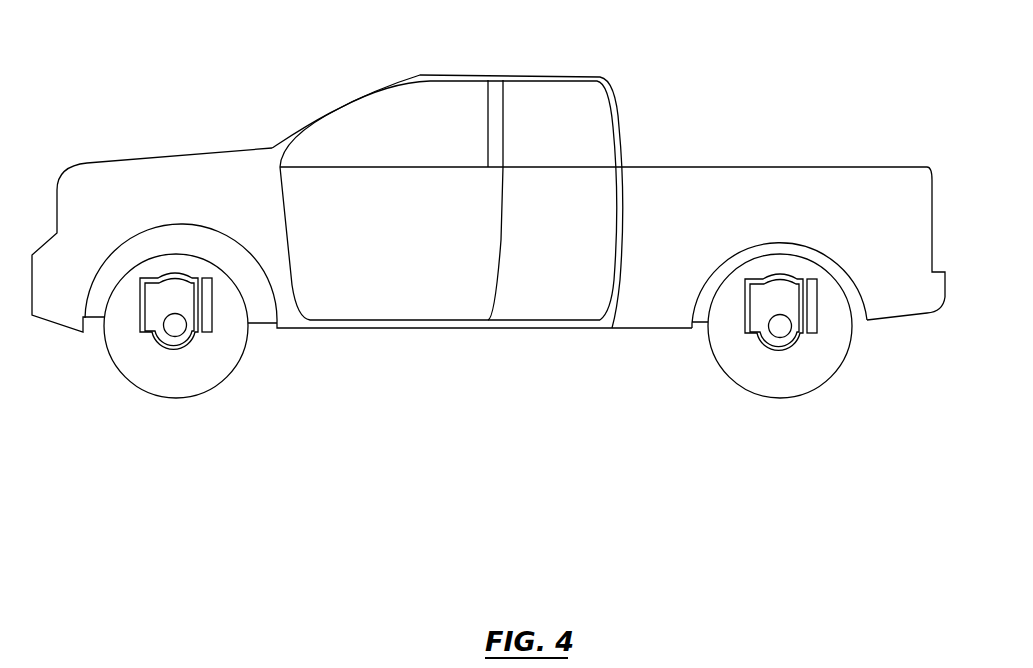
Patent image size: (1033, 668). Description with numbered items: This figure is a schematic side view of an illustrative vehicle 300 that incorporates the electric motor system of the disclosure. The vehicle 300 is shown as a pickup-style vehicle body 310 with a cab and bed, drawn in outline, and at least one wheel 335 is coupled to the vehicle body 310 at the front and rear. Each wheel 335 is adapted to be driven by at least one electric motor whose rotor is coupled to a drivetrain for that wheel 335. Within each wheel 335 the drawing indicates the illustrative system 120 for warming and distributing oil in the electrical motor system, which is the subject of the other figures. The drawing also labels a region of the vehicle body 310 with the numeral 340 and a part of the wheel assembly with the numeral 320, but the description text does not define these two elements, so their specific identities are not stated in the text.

The vehicle 300 is at (203, 100).
The vehicle body 310 is at (562, 213).
The front door 340 is at (392, 260).
The system 120 is at (141, 320).
The brake mounting bracket 320 is at (220, 323).
The wheel 335 is at (170, 378).